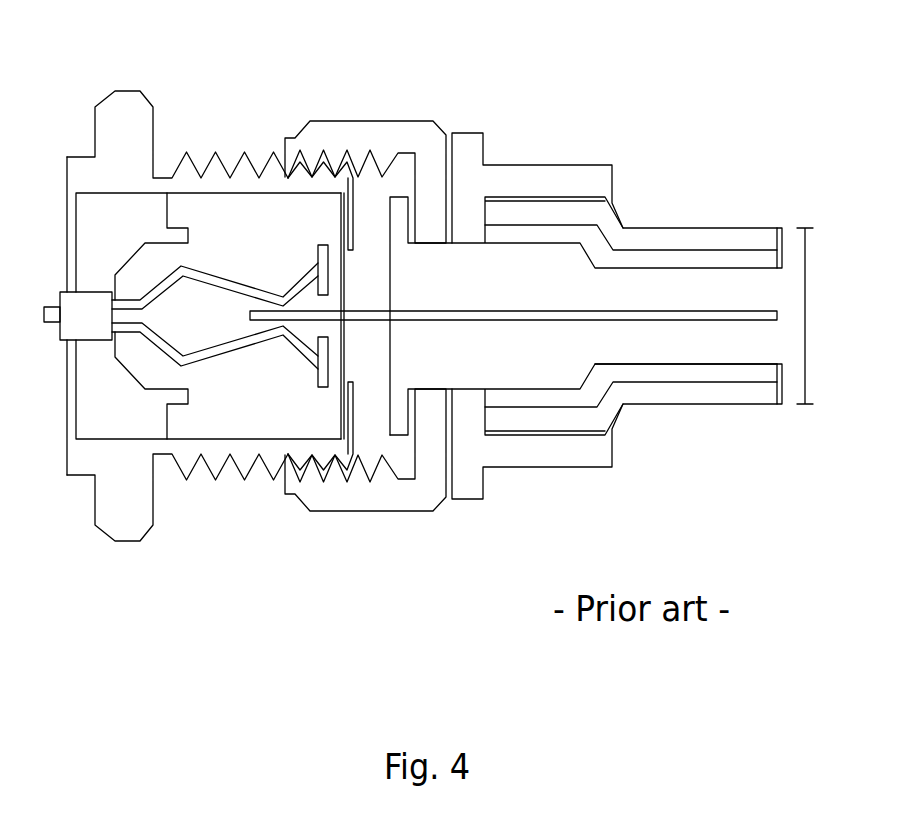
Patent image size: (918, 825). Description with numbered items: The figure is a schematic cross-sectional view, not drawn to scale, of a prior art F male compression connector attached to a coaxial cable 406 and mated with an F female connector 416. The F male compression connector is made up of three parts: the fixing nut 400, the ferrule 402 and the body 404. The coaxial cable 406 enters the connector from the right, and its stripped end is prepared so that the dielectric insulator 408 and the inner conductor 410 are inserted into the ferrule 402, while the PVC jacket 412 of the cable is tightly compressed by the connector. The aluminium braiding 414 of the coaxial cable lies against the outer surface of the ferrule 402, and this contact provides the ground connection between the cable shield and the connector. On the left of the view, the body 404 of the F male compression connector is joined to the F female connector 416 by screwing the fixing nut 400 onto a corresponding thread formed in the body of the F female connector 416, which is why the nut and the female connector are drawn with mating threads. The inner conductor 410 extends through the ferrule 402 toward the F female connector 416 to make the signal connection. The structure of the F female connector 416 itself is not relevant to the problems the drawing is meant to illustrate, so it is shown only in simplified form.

The fixing nut 400 is at (353, 145).
The ferrule 402 is at (527, 260).
The body 404 is at (530, 185).
The coaxial cable 406 is at (829, 316).
The dielectric insulator 408 is at (677, 343).
The inner conductor 410 is at (372, 320).
The PVC jacket 412 is at (760, 238).
The aluminium braiding 414 is at (672, 263).
The F female connector 416 is at (216, 427).